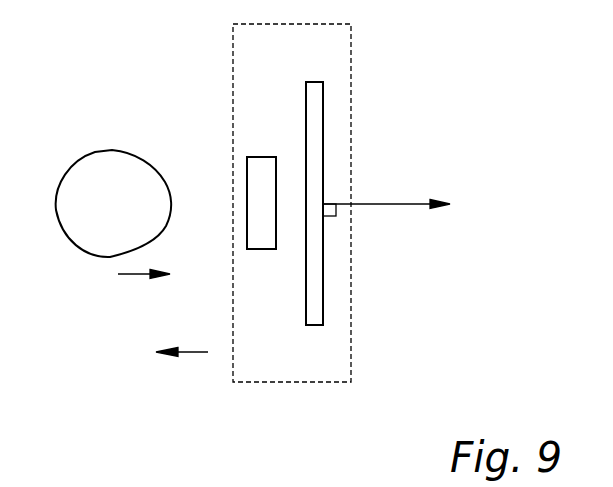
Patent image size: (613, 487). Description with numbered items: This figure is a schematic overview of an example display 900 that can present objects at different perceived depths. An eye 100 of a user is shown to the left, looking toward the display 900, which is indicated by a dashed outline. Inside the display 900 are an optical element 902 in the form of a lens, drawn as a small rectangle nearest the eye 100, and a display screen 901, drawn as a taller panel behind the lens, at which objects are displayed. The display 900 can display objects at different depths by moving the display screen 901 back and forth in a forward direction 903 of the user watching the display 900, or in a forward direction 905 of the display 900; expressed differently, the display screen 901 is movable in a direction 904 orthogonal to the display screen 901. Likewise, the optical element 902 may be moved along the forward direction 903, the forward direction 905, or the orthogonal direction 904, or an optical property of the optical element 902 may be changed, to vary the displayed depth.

The eye 100 is at (108, 149).
The display 900 is at (293, 383).
The display screen 901 is at (323, 113).
The optical element 902 is at (262, 157).
The forward direction of a user 903 is at (130, 277).
The direction orthogonal to the display screen 904 is at (411, 206).
The forward direction of the display 905 is at (187, 355).